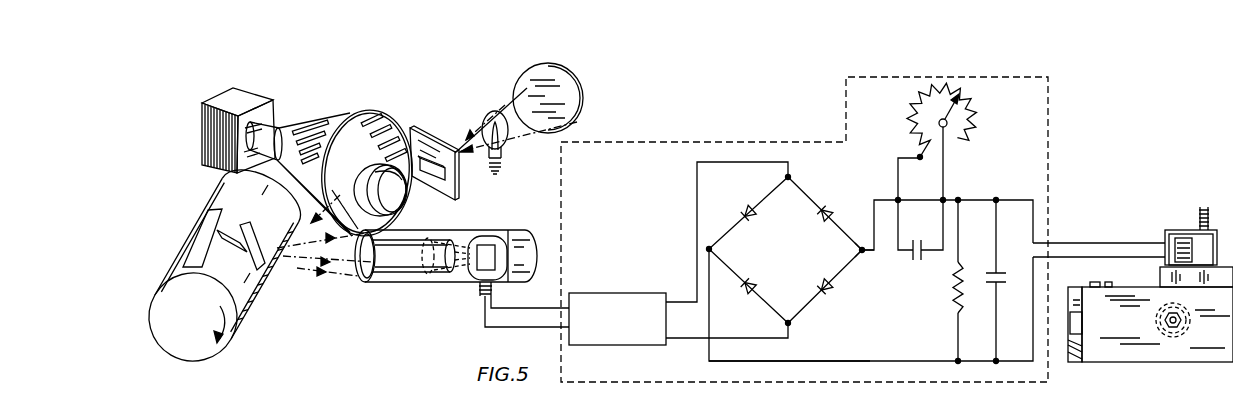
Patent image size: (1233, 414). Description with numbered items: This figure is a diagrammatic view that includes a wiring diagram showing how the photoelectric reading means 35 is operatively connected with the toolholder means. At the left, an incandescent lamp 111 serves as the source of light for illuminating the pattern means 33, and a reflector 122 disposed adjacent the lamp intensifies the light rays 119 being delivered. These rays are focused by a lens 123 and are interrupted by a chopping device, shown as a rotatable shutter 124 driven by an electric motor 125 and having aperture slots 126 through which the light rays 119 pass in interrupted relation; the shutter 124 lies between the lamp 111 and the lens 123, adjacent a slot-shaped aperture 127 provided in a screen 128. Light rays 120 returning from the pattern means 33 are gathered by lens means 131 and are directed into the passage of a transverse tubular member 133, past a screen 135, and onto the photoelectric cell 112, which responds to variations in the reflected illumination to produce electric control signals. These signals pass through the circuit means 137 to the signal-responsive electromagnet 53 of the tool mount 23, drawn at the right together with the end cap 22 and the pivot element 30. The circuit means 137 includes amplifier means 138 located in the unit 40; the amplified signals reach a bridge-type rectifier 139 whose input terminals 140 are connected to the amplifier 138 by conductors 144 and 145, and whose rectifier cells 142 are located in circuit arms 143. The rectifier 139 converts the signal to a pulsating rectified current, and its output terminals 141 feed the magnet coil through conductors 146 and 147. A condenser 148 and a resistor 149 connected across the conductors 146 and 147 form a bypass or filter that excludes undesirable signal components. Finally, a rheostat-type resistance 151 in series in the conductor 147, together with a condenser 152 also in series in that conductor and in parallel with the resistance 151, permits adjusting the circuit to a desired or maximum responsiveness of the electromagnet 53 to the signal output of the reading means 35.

The electric motor 125 is at (252, 98).
The rotatable shutter 124 is at (357, 112).
The aperture slots 126 is at (387, 140).
The lens 123 is at (363, 190).
The screen 128 is at (462, 172).
The slot-shaped aperture 127 is at (440, 178).
The incandescent lamp 111 is at (491, 112).
The reflector 122 is at (578, 88).
The reading means 35 is at (428, 110).
The pattern means 33 is at (248, 312).
The light rays 119 is at (300, 203).
The light rays 120 is at (308, 268).
The lens means 131 is at (362, 262).
The transverse tubular member 133 is at (395, 278).
The screen 135 is at (448, 283).
The photoelectric cell 112 is at (488, 243).
The unit 40 is at (846, 118).
The circuit means 137 is at (864, 340).
The amplifier means 138 is at (590, 296).
The conductor 145 is at (677, 302).
The conductor 144 is at (685, 340).
The conductor 146 is at (838, 361).
The input terminals 140 is at (790, 177).
The rectifier cells 142 is at (822, 222).
The circuit arms 143 is at (848, 242).
The output terminals 141 is at (864, 256).
The rectifier 139 is at (810, 298).
The rheostat-type resistance 151 is at (908, 113).
The condenser 152 is at (926, 256).
The conductor 147 is at (975, 200).
The resistor 149 is at (950, 290).
The condenser 148 is at (998, 285).
The electromagnet 53 is at (1183, 235).
The end cap 22 is at (1085, 322).
The tool mount 23 is at (1117, 352).
The pivot nut 30 is at (1192, 338).